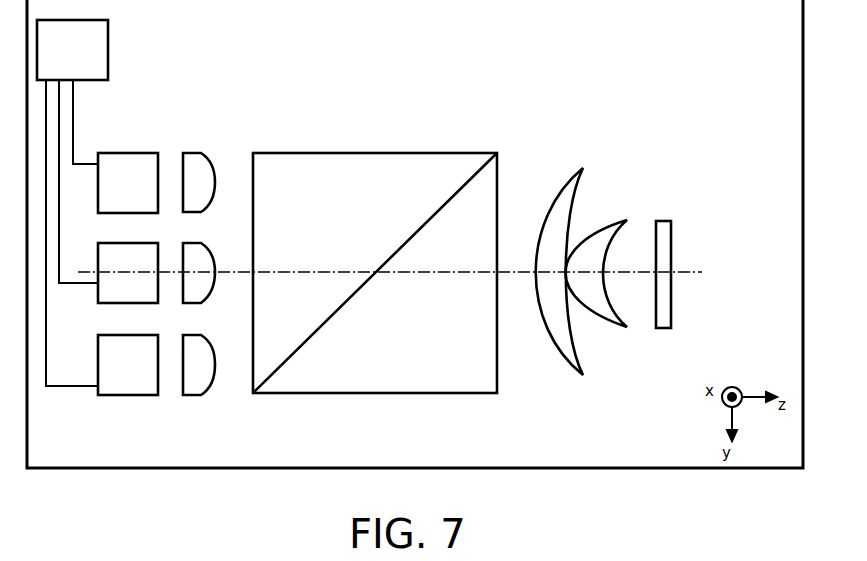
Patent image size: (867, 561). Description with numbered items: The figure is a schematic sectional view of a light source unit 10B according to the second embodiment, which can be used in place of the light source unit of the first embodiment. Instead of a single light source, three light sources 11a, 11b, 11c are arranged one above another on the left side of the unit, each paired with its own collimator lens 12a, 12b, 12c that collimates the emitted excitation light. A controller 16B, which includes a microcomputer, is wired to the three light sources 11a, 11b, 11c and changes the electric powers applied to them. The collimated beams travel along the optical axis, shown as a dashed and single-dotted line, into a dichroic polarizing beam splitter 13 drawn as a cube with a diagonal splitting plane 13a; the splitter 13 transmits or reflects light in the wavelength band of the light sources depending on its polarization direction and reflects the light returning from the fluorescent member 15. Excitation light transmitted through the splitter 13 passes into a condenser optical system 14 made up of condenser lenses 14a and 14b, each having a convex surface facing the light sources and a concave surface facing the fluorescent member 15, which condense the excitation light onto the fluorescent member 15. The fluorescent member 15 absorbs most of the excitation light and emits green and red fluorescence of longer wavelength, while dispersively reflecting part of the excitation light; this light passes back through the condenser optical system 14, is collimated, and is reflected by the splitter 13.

The light source unit 10B is at (113, 467).
The controller 16B is at (95, 63).
The light source 11a is at (116, 160).
The light source 11b is at (106, 297).
The light source 11c is at (105, 377).
The collimator lens 12a is at (200, 161).
The collimator lens 12b is at (200, 251).
The collimator lens 12c is at (202, 381).
The dichroic polarizing beam splitter 13 is at (375, 234).
The splitting plane 13a is at (480, 169).
The condenser optical system 14 is at (600, 204).
The condenser lens 14a is at (583, 167).
The condenser lens 14b is at (622, 219).
The fluorescent member 15 is at (661, 221).